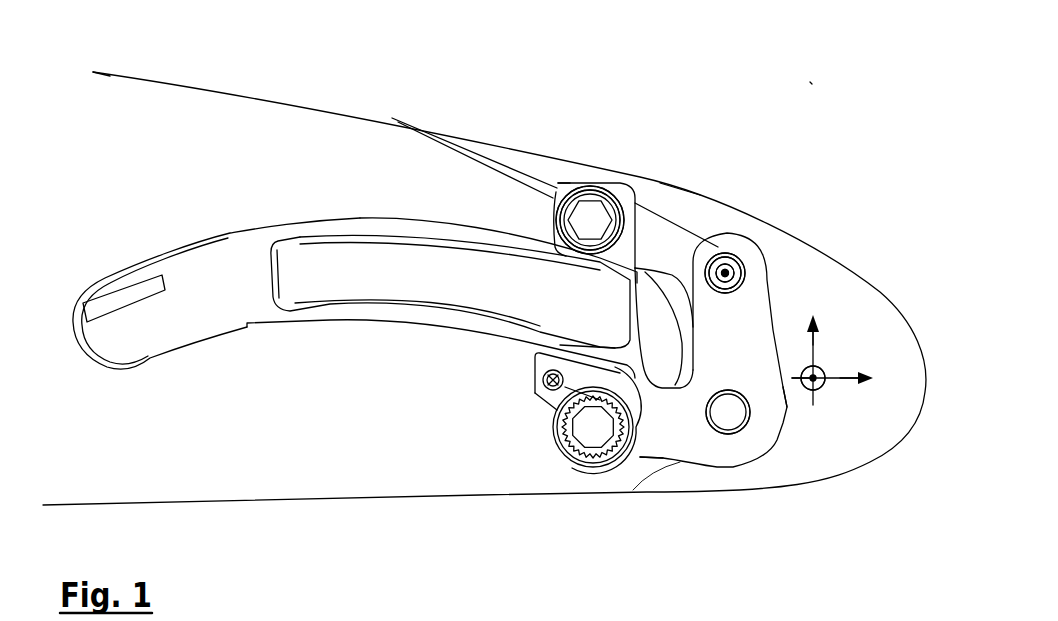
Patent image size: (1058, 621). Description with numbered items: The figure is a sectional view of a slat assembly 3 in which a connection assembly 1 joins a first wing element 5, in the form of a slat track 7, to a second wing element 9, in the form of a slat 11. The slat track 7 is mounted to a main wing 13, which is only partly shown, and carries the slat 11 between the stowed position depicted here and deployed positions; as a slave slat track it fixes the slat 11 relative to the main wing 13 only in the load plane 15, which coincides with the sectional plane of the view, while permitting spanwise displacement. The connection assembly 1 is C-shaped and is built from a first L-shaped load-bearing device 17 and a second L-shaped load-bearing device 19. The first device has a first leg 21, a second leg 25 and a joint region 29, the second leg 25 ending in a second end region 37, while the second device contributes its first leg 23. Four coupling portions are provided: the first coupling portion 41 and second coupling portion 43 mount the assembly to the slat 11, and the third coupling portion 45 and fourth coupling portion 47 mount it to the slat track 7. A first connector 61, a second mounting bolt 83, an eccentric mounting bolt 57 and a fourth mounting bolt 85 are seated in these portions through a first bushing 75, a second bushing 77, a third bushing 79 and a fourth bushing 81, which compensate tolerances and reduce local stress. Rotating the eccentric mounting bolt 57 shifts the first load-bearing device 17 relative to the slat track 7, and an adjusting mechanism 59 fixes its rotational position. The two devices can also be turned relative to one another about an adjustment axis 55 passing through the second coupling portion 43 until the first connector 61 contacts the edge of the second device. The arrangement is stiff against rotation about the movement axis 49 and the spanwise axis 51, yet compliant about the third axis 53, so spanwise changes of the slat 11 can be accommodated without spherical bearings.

The connection assembly 1 is at (813, 73).
The slat assembly 3 is at (378, 48).
The first wing element 5 is at (355, 194).
The slat track 7 is at (259, 247).
The second wing element 9 is at (878, 354).
The slat 11 is at (872, 347).
The main wing 13 is at (112, 98).
The load plane 15 is at (563, 94).
The first load-bearing device 17 is at (708, 485).
The second load-bearing device 19 is at (675, 190).
The first leg 21 is at (663, 430).
The first leg 23 is at (640, 203).
The second leg 25 is at (753, 294).
The joint region 29 is at (765, 432).
The second end region 37 is at (738, 247).
The first coupling portion 41 is at (730, 420).
The second coupling portion 43 is at (725, 267).
The third coupling portion 45 is at (602, 432).
The fourth coupling portion 47 is at (587, 217).
The movement axis 49 is at (848, 383).
The spanwise axis 51 is at (818, 387).
The third axis 53 is at (813, 342).
The adjustment axis 55 is at (730, 273).
The eccentric mounting bolt 57 is at (607, 450).
The adjusting mechanism 59 is at (553, 396).
The first connector 61 is at (720, 420).
The first bushing 75 is at (800, 425).
The second bushing 77 is at (722, 265).
The third bushing 79 is at (585, 425).
The fourth bushing 81 is at (605, 213).
The second mounting bolt 83 is at (740, 272).
The fourth mounting bolt 85 is at (579, 216).